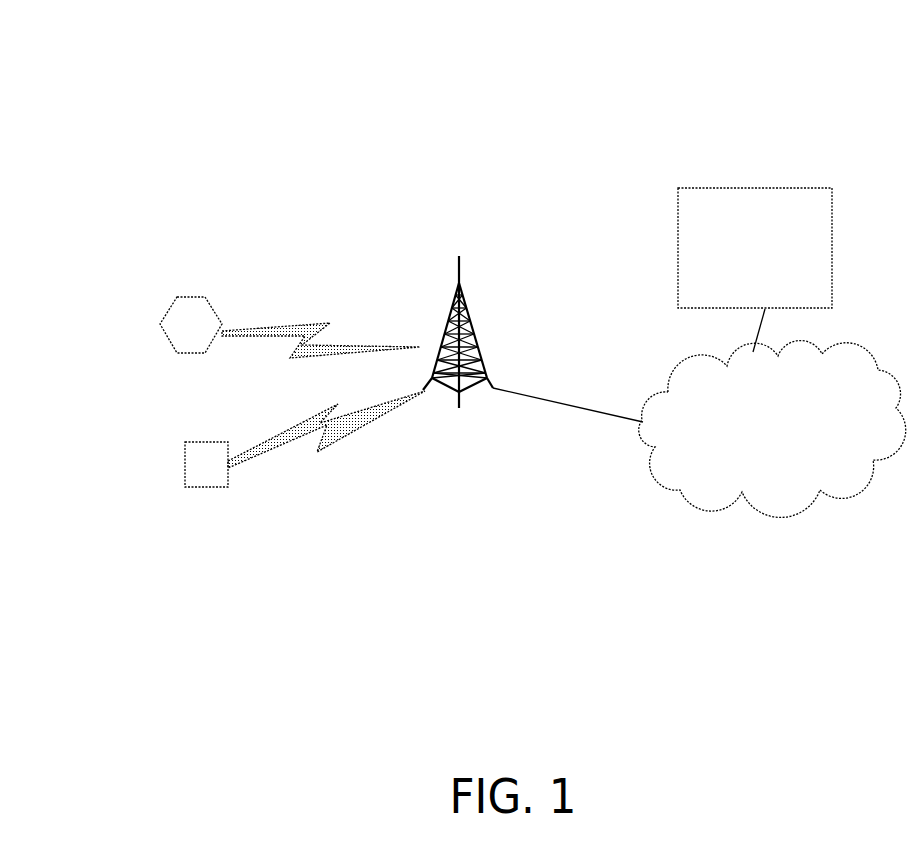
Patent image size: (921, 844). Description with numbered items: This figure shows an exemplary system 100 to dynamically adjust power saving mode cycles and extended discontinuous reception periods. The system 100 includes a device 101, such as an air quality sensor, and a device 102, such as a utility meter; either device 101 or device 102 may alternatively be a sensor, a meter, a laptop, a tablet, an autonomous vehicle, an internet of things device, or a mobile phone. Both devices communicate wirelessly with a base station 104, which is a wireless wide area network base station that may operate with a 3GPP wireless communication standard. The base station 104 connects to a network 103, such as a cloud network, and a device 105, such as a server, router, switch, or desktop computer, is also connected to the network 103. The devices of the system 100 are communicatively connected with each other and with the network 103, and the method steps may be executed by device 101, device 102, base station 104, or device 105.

The system 100 is at (206, 64).
The device 101 is at (160, 322).
The device 102 is at (185, 469).
The network 103 is at (699, 429).
The base station 104 is at (457, 406).
The device 105 is at (755, 270).